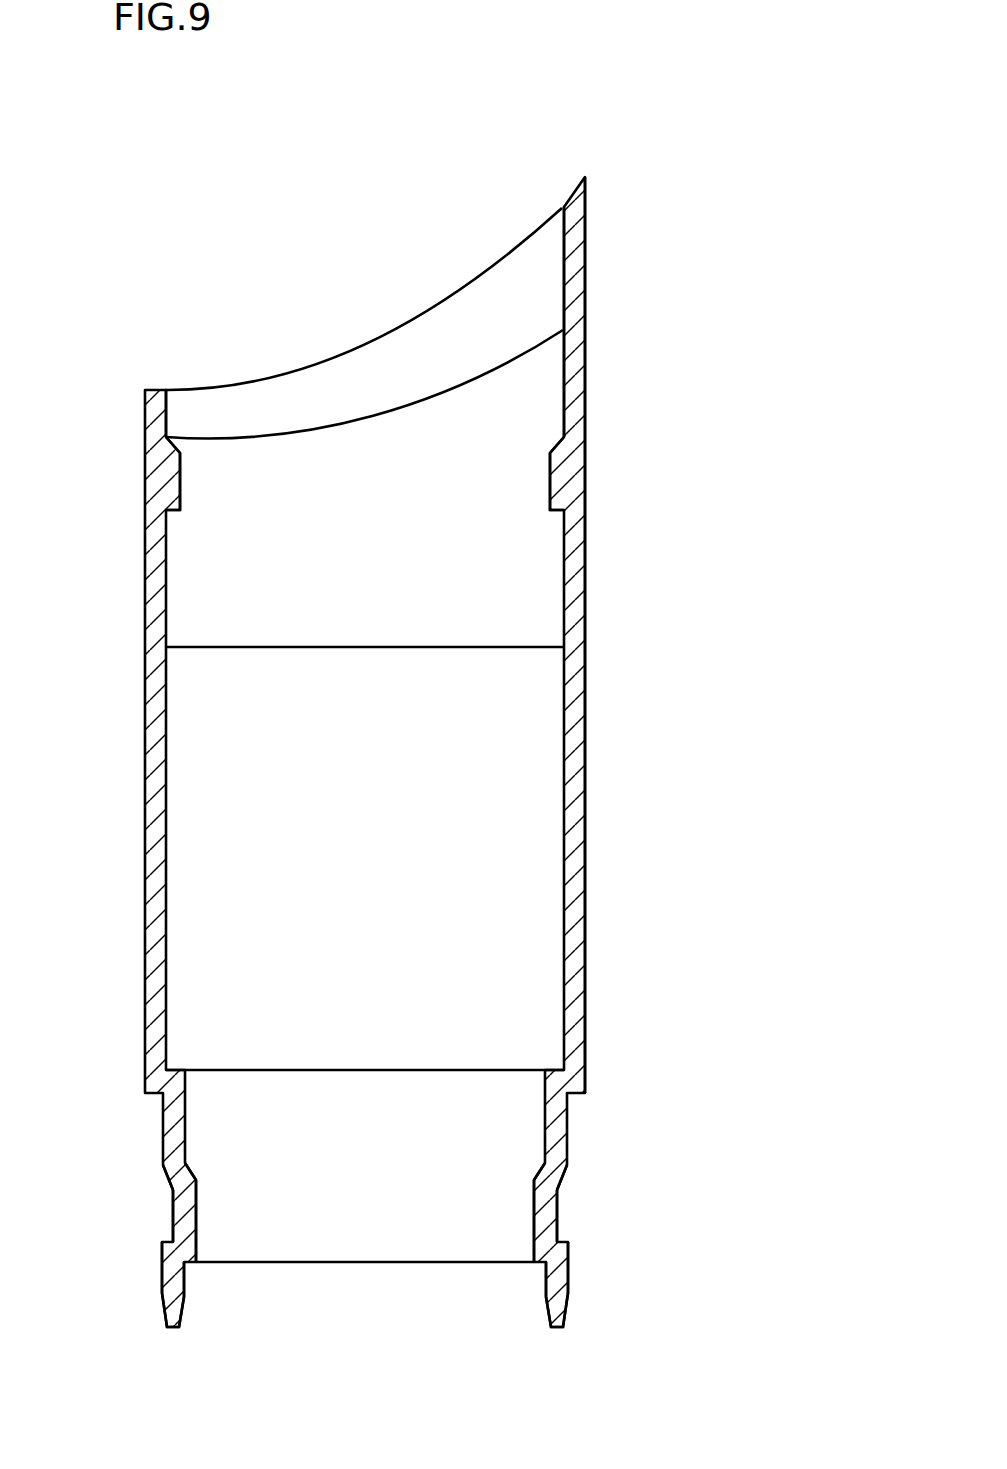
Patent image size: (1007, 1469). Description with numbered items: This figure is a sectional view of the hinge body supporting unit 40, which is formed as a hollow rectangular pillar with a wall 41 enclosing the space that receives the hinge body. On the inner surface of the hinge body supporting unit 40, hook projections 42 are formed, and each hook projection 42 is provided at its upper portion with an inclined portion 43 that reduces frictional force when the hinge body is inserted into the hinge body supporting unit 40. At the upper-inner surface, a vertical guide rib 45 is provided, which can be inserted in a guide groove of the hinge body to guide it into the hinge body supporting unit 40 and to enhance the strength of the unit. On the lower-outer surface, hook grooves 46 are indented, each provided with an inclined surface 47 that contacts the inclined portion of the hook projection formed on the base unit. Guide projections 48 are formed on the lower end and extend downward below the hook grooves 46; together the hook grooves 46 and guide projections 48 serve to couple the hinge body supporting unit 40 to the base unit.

The hinge body supporting unit 40 is at (643, 217).
The pipe body 41 is at (573, 290).
The hook projection 42 is at (175, 478).
The inclined portion 43 is at (555, 445).
The guide rib 45 is at (532, 357).
The hook groove 46 is at (173, 1215).
The inclined surface 47 is at (170, 1180).
The guide projection 48 is at (170, 1310).